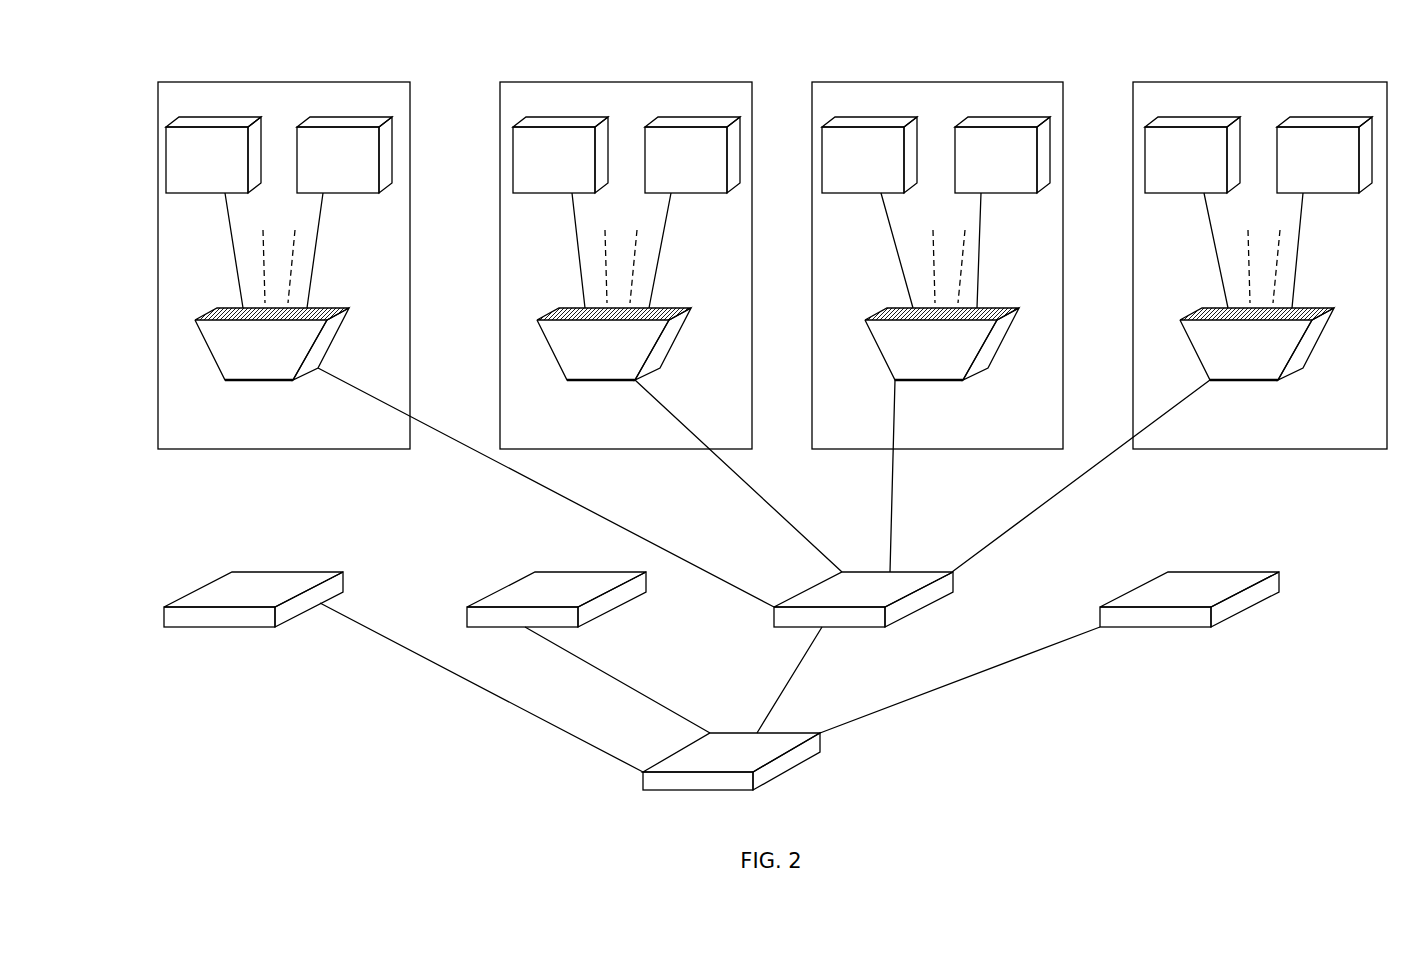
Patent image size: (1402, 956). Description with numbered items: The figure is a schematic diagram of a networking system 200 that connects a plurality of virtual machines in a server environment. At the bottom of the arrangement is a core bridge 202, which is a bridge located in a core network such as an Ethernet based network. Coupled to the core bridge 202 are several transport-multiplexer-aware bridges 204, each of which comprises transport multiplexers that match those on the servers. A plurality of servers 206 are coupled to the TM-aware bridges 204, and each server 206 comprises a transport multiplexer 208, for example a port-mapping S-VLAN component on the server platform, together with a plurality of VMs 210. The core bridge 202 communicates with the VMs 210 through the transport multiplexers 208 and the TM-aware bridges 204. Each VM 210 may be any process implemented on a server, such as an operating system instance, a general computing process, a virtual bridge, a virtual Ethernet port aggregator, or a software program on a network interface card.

The networking system 200 is at (1312, 805).
The core bridge 202 is at (795, 767).
The transport-multiplexer-aware bridge 204 is at (1263, 638).
The server 206 is at (1295, 82).
The transport multiplexer 208 is at (1308, 403).
The virtual machine 210 is at (1350, 228).